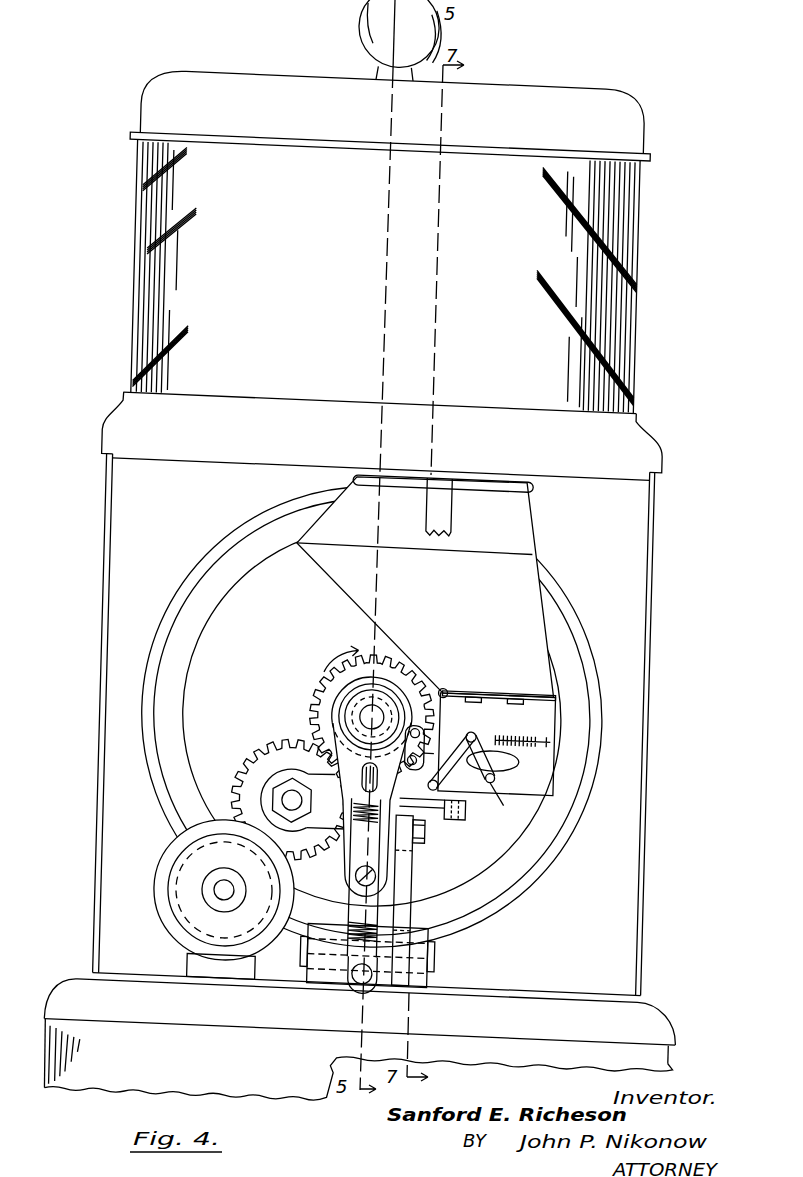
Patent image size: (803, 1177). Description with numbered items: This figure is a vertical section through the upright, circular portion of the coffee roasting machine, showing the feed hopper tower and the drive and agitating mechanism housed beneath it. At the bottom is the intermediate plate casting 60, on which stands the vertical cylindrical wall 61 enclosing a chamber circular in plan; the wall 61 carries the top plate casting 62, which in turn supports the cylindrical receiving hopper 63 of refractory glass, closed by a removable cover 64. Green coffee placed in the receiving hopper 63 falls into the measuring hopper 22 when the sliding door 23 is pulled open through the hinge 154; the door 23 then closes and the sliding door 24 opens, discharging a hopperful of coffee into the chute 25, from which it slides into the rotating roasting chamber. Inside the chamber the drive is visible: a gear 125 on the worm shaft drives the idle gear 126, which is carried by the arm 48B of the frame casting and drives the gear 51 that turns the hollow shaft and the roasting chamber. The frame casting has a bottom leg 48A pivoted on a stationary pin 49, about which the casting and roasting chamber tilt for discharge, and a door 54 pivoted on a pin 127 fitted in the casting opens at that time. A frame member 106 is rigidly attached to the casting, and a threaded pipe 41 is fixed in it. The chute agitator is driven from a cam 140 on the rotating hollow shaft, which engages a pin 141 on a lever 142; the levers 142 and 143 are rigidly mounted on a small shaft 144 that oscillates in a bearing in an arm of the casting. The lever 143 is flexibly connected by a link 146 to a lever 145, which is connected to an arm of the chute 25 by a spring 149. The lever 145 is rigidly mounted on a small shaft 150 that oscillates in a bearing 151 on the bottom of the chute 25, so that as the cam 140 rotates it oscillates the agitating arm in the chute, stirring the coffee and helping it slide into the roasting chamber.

The measuring hopper 22 is at (531, 511).
The sliding door 23 is at (377, 488).
The sliding door 24 is at (463, 689).
The chute 25 is at (497, 744).
The pipe 41 is at (353, 714).
The bottom leg 48A is at (352, 874).
The arm 48B is at (307, 798).
The stationary pin 49 is at (440, 957).
The gear 51 is at (379, 664).
The door 54 is at (423, 901).
The intermediate plate casting 60 is at (72, 1012).
The vertical cylindrical wall 61 is at (651, 680).
The top plate casting 62 is at (98, 443).
The receiving hopper 63 is at (629, 214).
The removable cover 64 is at (634, 116).
The frame member 106 is at (358, 818).
The gear 125 is at (168, 872).
The idle gear 126 is at (266, 766).
The pin 127 is at (472, 811).
The cam 140 is at (330, 664).
The pin 141 is at (445, 687).
The lever 142 is at (472, 732).
The lever 143 is at (443, 785).
The small shaft 144 is at (437, 748).
The lever 145 is at (500, 775).
The link 146 is at (452, 761).
The spring 149 is at (523, 727).
The small shaft 150 is at (513, 800).
The bearing 151 is at (529, 757).
The hinge 154 is at (473, 482).